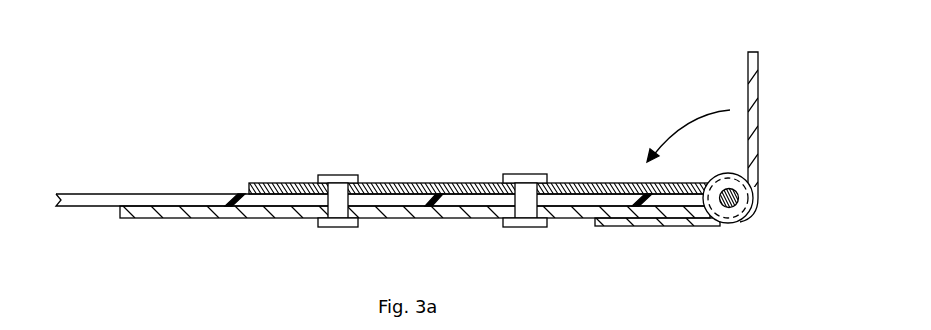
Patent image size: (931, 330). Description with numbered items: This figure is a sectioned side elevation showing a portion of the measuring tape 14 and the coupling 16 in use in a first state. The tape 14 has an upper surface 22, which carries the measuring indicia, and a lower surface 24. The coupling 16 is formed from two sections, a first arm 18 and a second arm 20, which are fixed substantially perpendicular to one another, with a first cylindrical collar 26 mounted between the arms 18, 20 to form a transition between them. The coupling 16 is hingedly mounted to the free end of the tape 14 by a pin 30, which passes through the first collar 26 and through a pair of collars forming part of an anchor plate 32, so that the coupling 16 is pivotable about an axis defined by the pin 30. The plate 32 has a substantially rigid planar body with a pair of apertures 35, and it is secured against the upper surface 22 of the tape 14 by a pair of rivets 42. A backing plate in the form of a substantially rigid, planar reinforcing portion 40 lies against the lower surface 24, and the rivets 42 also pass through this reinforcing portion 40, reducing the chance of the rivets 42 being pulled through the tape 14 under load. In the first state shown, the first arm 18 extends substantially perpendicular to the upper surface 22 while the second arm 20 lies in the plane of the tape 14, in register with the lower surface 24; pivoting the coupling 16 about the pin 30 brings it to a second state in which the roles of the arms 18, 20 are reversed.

The retractable measuring tape 14 is at (114, 183).
The coupling 16 is at (735, 88).
The first arm 18 is at (753, 124).
The second arm 20 is at (653, 227).
The upper surface 22 is at (190, 194).
The lower surface 24 is at (88, 207).
The first cylindrical collar 26 is at (745, 194).
The pin 30 is at (733, 213).
The plate 32 is at (405, 183).
The apertures 35 is at (348, 185).
The reinforcing portion 40 is at (230, 213).
The rivets 42 is at (342, 222).